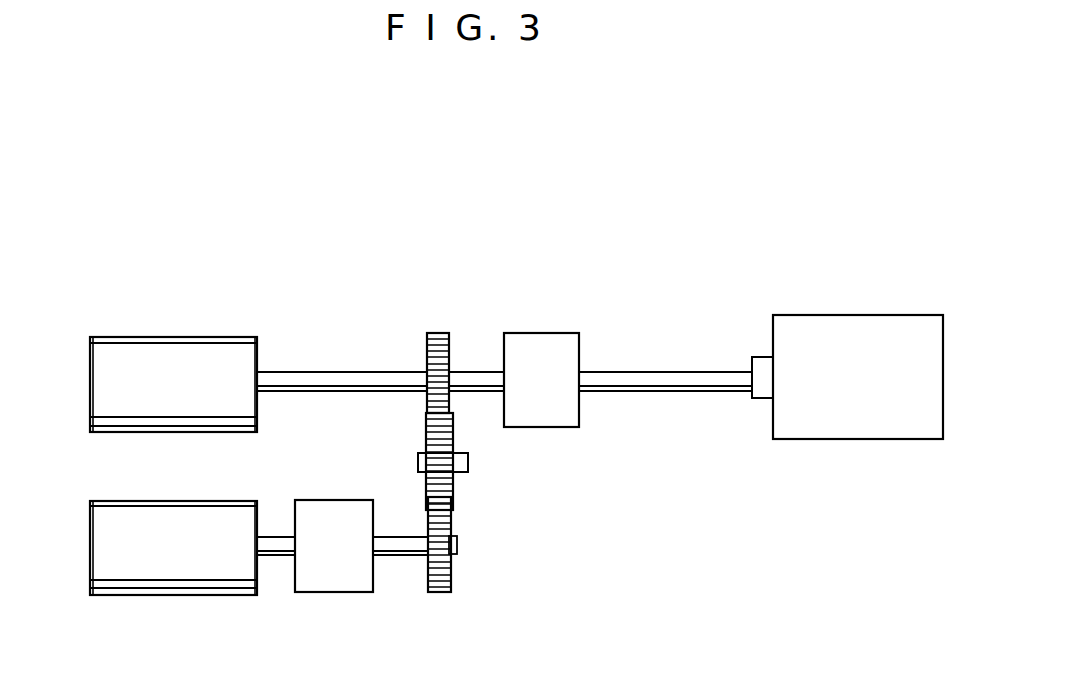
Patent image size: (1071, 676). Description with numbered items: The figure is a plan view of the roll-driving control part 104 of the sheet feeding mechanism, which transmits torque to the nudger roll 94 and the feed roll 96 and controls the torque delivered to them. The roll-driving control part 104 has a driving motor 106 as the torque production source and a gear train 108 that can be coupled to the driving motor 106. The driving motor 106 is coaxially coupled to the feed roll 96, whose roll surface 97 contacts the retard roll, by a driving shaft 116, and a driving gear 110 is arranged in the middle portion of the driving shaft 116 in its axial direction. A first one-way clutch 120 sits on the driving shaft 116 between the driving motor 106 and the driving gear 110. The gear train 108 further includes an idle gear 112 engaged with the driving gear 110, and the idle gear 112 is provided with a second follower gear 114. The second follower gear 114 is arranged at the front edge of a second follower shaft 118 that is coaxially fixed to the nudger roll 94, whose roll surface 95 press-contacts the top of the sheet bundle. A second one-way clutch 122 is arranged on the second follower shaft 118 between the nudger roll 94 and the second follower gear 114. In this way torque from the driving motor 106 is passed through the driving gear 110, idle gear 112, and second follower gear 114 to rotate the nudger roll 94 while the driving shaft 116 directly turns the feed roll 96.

The roll-driving control part 104 is at (741, 190).
The feed roll 96 is at (92, 337).
The roll surface 97 is at (202, 337).
The nudger roll 94 is at (90, 595).
The roll surface 95 is at (173, 572).
The gear train 108 is at (417, 335).
The driving gear 110 is at (445, 335).
The idle gear 112 is at (454, 487).
The second follower gear 114 is at (448, 582).
The driving shaft 116 is at (700, 369).
The second follower shaft 118 is at (401, 557).
The first one-way clutch 120 is at (578, 333).
The second one-way clutch 122 is at (293, 593).
The driving motor 106 is at (872, 327).